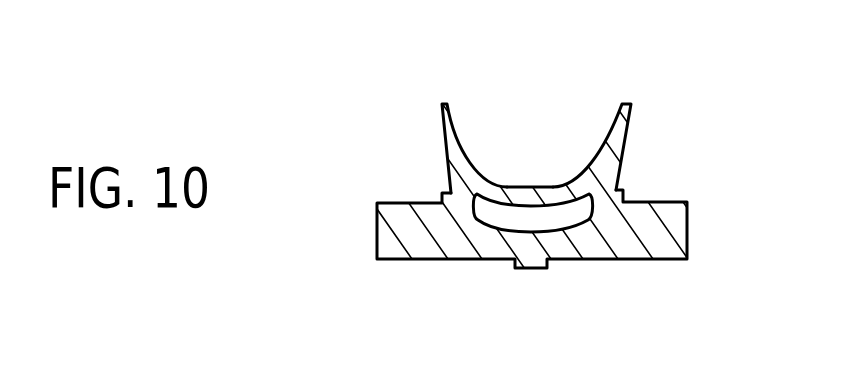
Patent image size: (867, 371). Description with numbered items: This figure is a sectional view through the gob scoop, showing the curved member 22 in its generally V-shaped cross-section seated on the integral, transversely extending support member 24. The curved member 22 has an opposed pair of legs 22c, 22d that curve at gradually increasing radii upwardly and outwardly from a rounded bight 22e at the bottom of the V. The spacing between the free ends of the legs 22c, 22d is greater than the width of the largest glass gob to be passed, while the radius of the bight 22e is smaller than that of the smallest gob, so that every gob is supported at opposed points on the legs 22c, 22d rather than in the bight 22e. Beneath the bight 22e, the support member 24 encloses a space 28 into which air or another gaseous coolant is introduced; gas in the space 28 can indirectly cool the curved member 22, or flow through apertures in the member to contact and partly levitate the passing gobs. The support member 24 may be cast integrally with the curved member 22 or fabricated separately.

The curved member 22 is at (518, 107).
The leg 22c is at (442, 100).
The leg 22d is at (632, 101).
The rounded bight 22e is at (528, 187).
The support member 24 is at (668, 240).
The space 28 is at (551, 224).